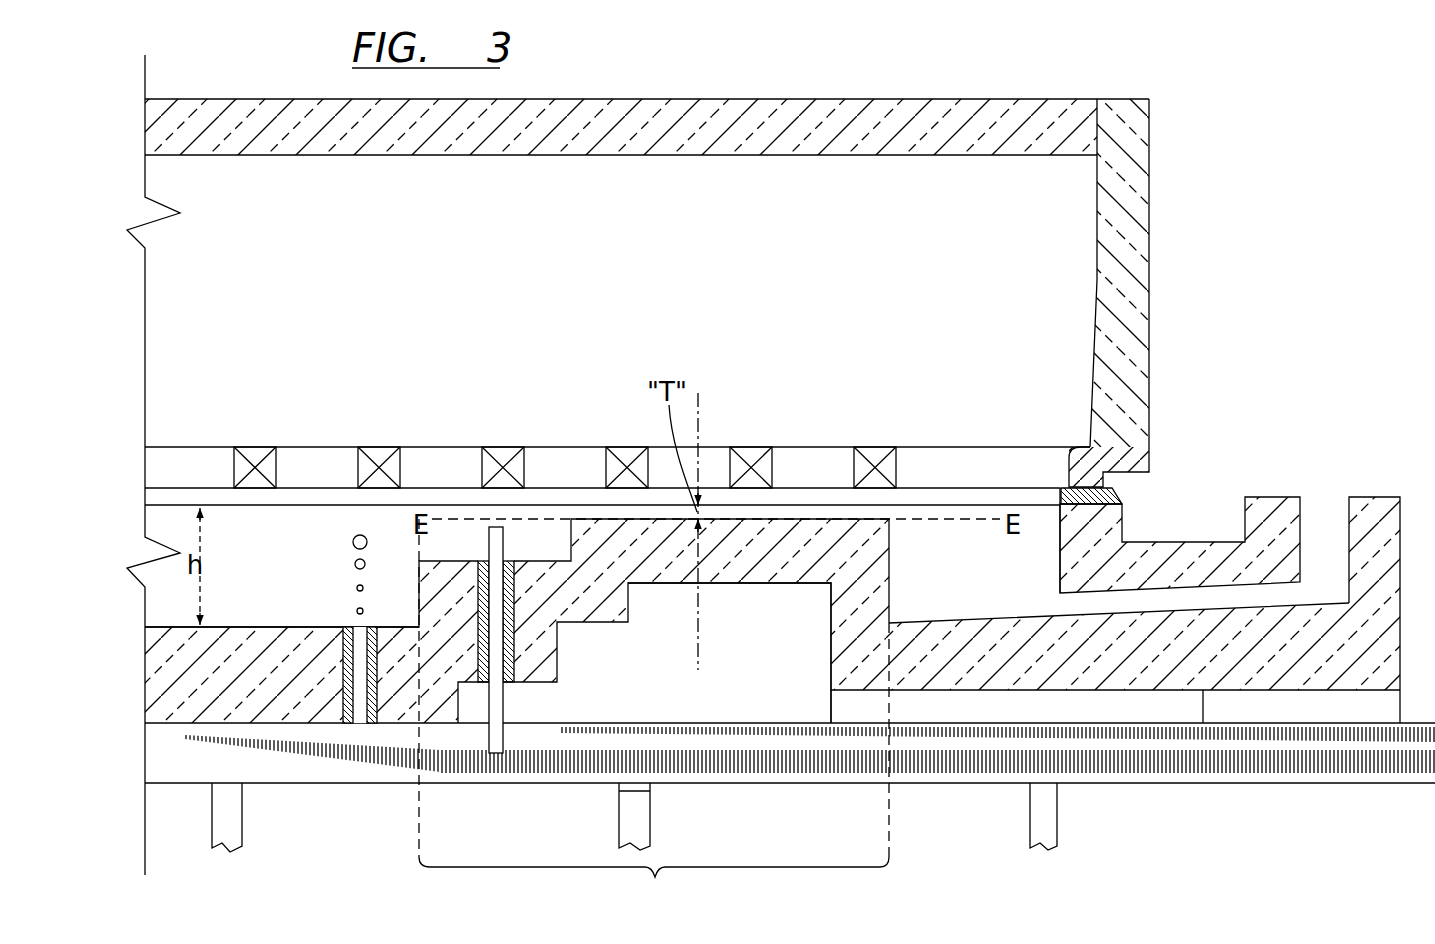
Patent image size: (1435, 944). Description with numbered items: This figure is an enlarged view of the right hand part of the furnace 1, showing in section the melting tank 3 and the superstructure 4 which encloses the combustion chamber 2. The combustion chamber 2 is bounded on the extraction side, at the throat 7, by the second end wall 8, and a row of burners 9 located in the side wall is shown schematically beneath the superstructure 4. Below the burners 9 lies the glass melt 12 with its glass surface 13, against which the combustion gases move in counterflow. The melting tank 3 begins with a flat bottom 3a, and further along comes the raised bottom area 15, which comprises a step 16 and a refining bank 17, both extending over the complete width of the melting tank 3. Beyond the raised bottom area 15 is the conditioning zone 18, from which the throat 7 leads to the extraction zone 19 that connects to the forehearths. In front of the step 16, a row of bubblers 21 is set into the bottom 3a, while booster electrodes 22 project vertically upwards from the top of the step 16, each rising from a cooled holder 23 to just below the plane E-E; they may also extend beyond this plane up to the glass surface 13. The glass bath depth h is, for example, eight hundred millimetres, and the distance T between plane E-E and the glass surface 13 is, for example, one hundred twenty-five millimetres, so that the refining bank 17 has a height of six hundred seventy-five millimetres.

The furnace 1 is at (1130, 78).
The combustion chamber 2 is at (561, 350).
The melting tank 3 is at (258, 690).
The flat bottom 3a is at (258, 622).
The superstructure 4 is at (727, 128).
The throat 7 is at (1182, 600).
The second end wall 8 is at (1120, 325).
The burners 9 is at (500, 455).
The glass melt 12 is at (267, 565).
The glass surface 13 is at (302, 503).
The raised bottom area 15 is at (654, 713).
The step 16 is at (546, 580).
The refining bank 17 is at (755, 565).
The conditioning zone 18 is at (951, 590).
The extraction zone 19 is at (1323, 523).
The bubblers 21 is at (360, 730).
The booster electrodes 22 is at (505, 701).
The cooled holder 23 is at (545, 640).